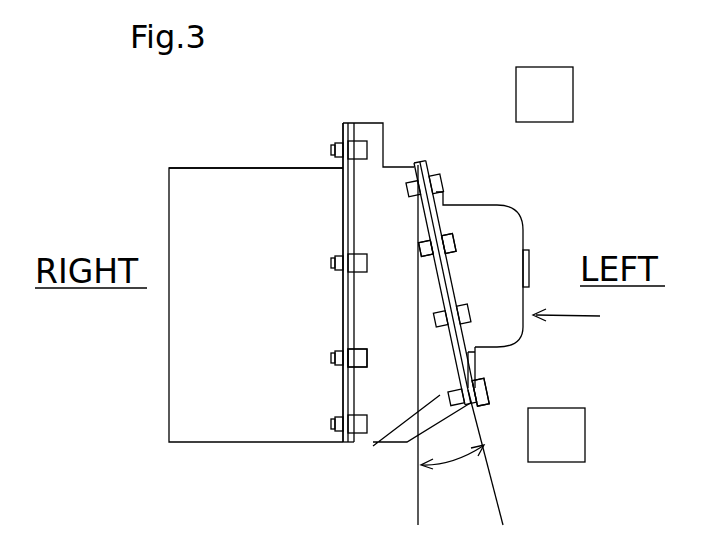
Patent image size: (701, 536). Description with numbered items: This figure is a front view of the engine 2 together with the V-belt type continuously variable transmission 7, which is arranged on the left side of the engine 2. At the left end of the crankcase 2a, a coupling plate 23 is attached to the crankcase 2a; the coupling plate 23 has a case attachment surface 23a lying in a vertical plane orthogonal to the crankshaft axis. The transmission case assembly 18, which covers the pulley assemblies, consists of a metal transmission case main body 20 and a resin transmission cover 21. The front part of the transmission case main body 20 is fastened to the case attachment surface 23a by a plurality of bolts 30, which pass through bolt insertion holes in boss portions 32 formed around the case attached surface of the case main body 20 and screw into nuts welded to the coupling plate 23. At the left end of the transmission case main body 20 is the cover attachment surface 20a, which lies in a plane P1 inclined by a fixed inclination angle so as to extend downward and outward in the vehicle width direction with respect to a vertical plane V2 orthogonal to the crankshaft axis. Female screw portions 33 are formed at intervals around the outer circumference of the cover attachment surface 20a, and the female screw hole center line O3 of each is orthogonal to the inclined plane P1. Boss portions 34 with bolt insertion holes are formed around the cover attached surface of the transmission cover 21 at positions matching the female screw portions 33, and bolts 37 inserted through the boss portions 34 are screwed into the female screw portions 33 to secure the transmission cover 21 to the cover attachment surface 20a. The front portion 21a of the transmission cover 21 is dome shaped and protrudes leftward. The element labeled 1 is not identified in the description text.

The engine mount / support 1 is at (552, 105).
The engine 2 is at (140, 204).
The crankcase 2a is at (231, 212).
The V-belt type continuously variable transmission 7 is at (570, 321).
The transmission case assembly 18 is at (466, 232).
The transmission case main body 20 is at (377, 140).
The cover attachment surface 20a is at (477, 353).
The transmission cover 21 is at (430, 177).
The front portion 21a is at (505, 222).
The coupling plate 23 is at (342, 227).
The case attachment surface 23a is at (345, 398).
The bolts 30 is at (367, 360).
The boss portions 32 is at (357, 350).
The female screw portions 33 is at (424, 245).
The boss portions 34 is at (437, 248).
The bolts 37 is at (450, 243).
The female screw hole center line O3 is at (411, 439).
The vertical plane V2 is at (418, 472).
The plane P1 is at (487, 462).